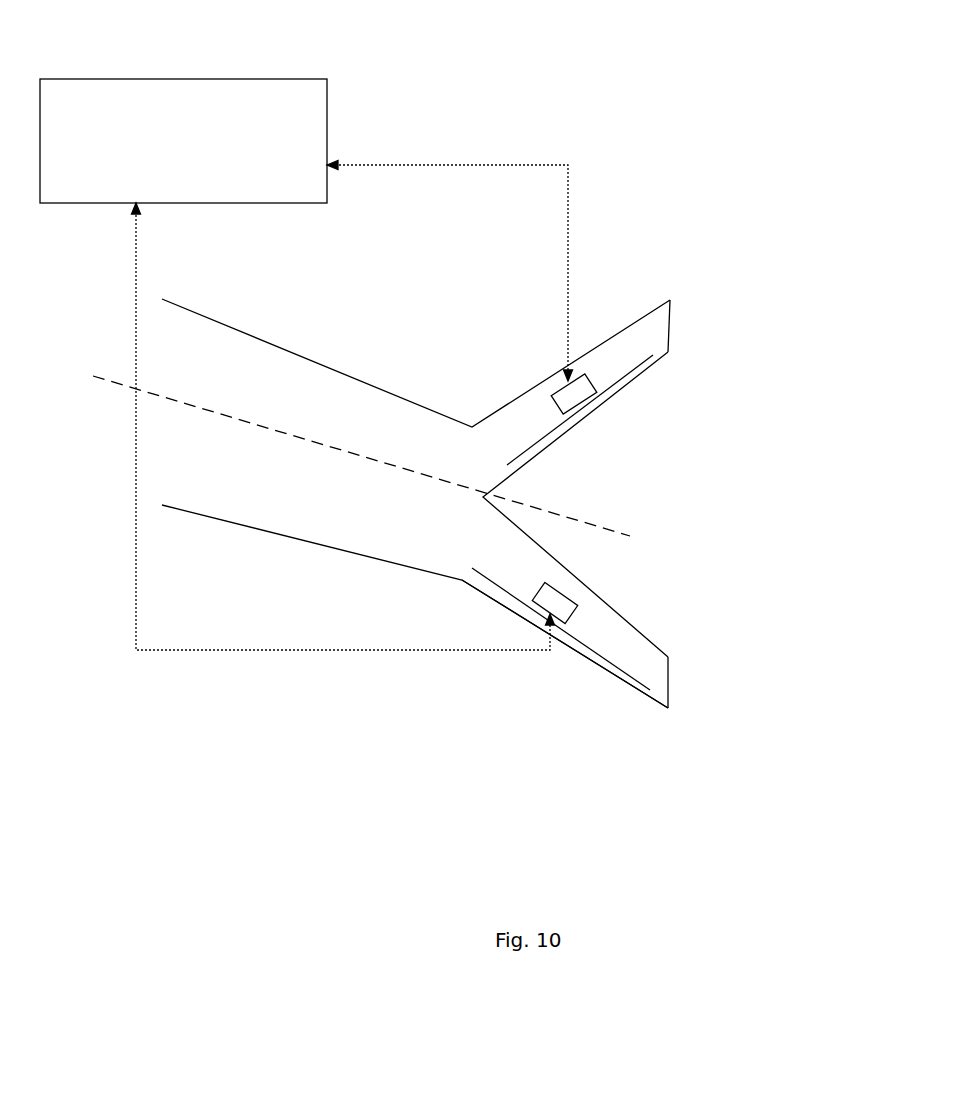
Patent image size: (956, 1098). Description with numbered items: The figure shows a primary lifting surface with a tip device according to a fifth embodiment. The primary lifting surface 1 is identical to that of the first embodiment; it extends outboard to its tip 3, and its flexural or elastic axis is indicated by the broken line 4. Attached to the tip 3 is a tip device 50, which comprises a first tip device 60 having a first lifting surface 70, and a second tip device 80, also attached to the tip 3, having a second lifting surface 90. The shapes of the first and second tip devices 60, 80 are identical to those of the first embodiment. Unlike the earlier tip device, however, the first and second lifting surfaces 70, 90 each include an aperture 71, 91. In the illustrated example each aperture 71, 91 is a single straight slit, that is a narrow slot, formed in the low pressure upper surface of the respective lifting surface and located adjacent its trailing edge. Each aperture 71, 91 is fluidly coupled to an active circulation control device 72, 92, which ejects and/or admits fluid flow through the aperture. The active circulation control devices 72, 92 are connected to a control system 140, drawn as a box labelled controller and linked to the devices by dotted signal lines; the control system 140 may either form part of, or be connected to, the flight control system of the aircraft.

The control system 140 is at (341, 102).
The lifting surface 1 is at (268, 330).
The tip 3 is at (455, 547).
The flexural axis 4 is at (400, 467).
The tip device 50 is at (644, 446).
The first tip device 60 is at (688, 325).
The first lifting surface 70 is at (620, 368).
The aperture 71 is at (530, 443).
The active circulation control device 72 is at (575, 398).
The second tip device 80 is at (695, 655).
The second lifting surface 90 is at (510, 583).
The aperture 91 is at (592, 647).
The active circulation control device 92 is at (552, 607).